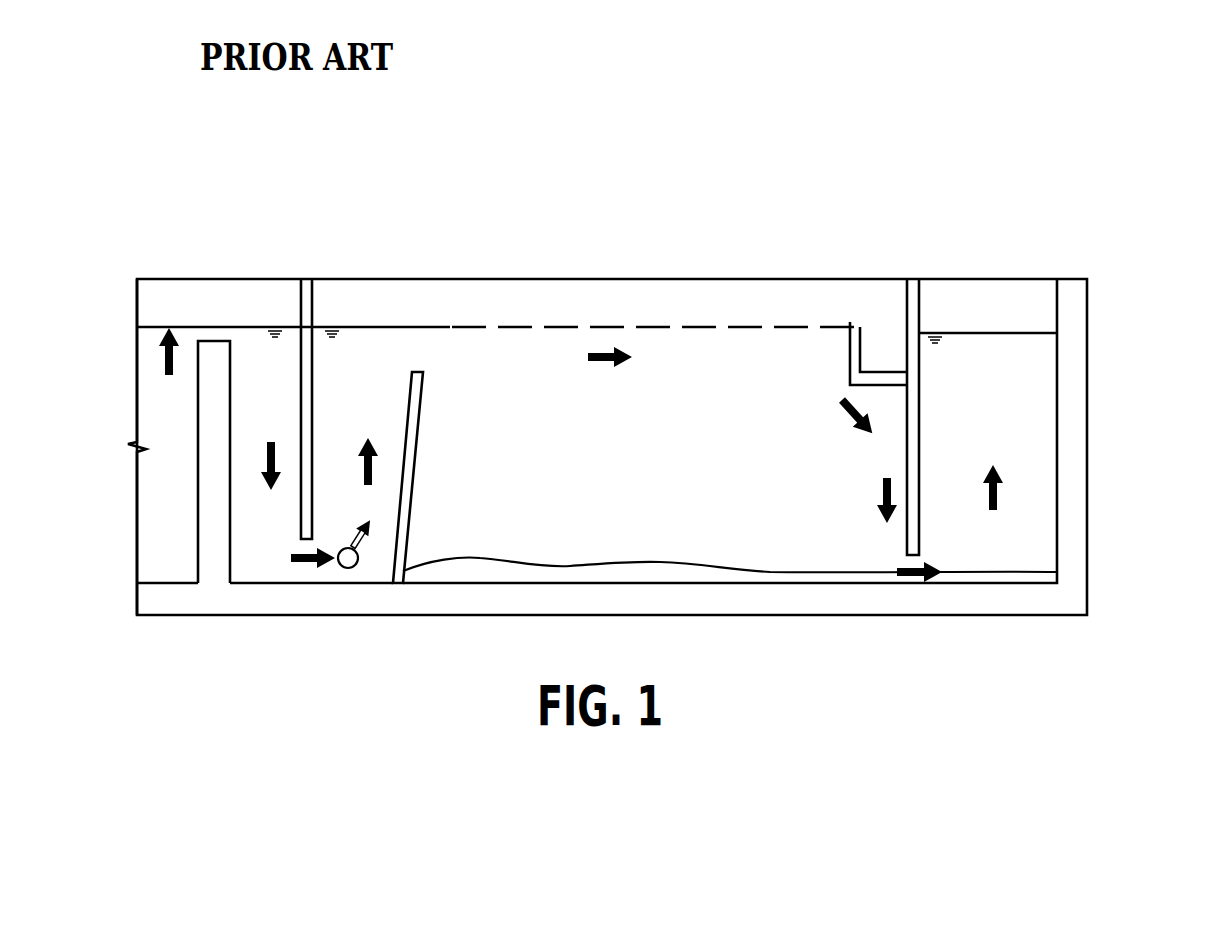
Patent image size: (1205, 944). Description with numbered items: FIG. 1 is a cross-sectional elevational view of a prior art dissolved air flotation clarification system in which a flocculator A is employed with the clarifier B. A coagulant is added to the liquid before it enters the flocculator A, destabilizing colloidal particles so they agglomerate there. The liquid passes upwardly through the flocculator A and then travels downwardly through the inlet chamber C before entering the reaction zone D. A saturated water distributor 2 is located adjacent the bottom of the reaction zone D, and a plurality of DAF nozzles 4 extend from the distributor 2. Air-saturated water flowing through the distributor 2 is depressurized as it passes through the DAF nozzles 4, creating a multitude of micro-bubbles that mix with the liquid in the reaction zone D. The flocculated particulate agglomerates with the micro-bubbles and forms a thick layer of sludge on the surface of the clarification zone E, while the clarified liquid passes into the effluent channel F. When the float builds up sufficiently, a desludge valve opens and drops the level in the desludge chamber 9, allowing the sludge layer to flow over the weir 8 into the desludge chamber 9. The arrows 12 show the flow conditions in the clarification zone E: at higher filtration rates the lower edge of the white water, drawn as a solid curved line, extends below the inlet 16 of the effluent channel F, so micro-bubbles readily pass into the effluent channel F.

The flocculator A is at (155, 410).
The clarifier B is at (537, 258).
The inlet chamber C is at (258, 563).
The reaction zone D is at (363, 373).
The clarification zone E is at (693, 362).
The effluent channel F is at (1040, 390).
The saturated water distributor 2 is at (348, 568).
The DAF nozzles 4 is at (352, 545).
The weir 8 is at (858, 330).
The desludge chamber 9 is at (883, 343).
The arrows 12 is at (595, 360).
The inlet of the effluent channel 16 is at (912, 565).